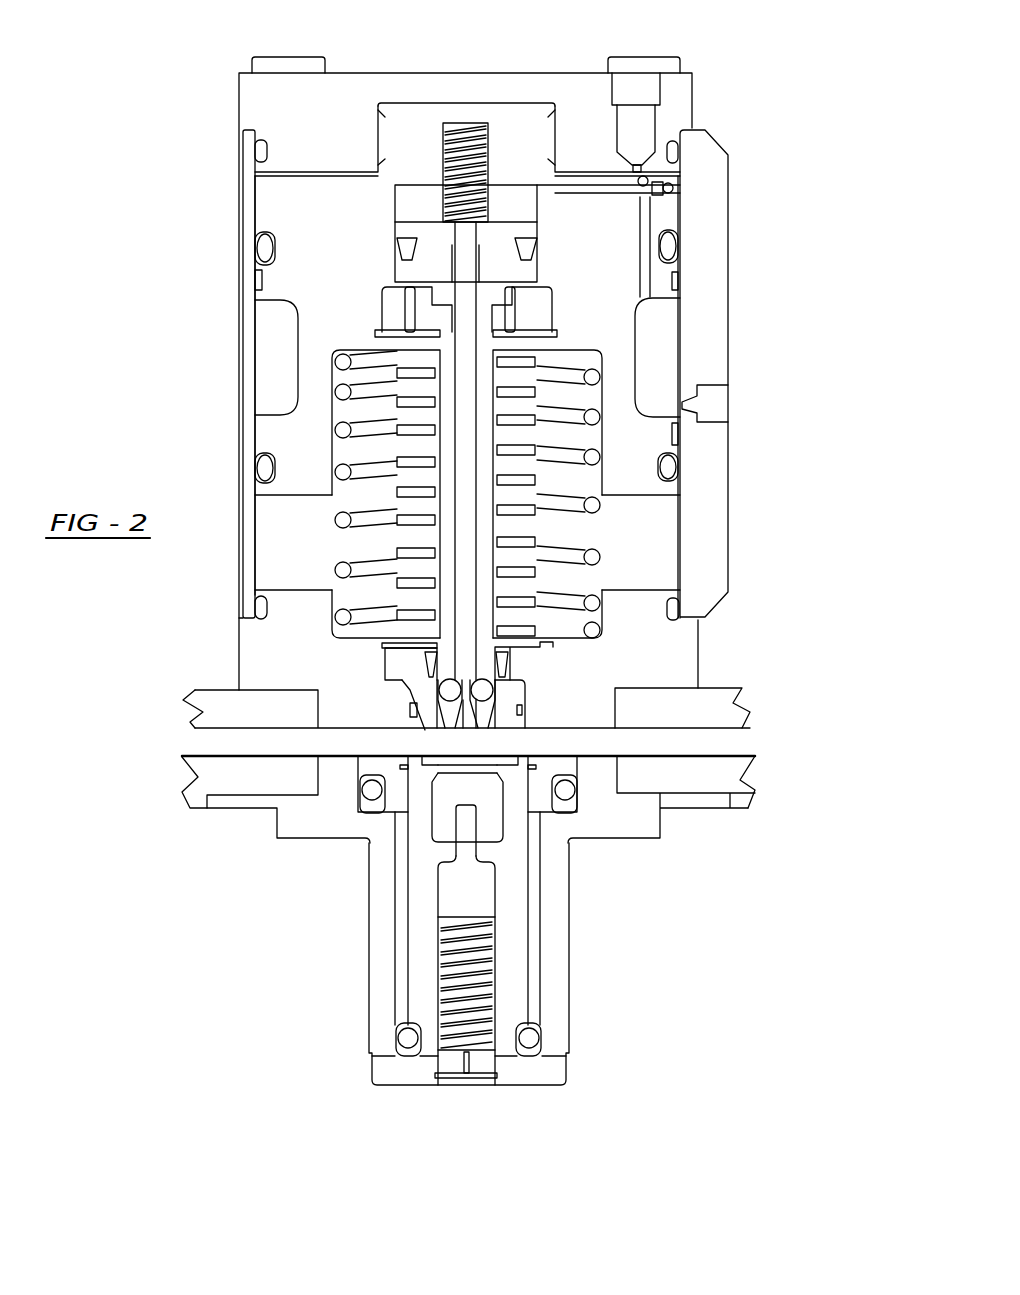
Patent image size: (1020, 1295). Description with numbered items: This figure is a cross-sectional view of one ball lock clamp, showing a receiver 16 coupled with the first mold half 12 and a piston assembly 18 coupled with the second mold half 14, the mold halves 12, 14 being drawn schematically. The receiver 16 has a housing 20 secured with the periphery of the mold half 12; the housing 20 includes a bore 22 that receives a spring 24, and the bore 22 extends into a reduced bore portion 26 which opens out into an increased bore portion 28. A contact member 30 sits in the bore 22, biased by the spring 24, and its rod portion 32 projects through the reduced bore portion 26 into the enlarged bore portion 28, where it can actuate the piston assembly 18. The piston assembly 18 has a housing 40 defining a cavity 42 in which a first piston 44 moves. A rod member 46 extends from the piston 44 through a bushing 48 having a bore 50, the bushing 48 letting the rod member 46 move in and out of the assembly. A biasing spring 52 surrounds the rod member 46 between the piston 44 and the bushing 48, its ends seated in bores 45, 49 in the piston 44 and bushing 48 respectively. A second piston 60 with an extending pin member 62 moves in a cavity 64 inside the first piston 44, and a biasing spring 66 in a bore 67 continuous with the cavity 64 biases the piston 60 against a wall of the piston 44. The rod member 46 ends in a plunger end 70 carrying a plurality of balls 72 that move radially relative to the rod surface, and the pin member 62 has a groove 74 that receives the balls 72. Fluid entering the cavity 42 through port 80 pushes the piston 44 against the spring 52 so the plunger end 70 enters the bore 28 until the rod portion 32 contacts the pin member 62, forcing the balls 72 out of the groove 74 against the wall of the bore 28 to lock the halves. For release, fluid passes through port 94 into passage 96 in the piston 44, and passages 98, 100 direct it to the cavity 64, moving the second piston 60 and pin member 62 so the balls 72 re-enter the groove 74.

The first mold half 12 is at (212, 782).
The second mold half 14 is at (212, 714).
The receiver 16 is at (310, 989).
The piston assembly 18 is at (184, 372).
The housing 20 is at (373, 1000).
The bore 22 is at (448, 982).
The spring 24 is at (495, 985).
The reduced bore portion 26 is at (493, 860).
The increased bore portion 28 is at (442, 805).
The contact member 30 is at (470, 887).
The rod portion 32 is at (467, 818).
The housing 40 is at (245, 285).
The cavity 42 is at (255, 534).
The first piston 44 is at (285, 197).
The bore 45 is at (338, 408).
The rod member 46 is at (445, 318).
The bushing 48 is at (365, 663).
The bore 49 is at (333, 607).
The bore 50 is at (428, 730).
The biasing spring 52 is at (378, 461).
The second piston 60 is at (413, 230).
The pin member 62 is at (465, 262).
The cavity 64 is at (403, 195).
The biasing spring 66 is at (435, 142).
The bore 67 is at (456, 122).
The plunger end 70 is at (525, 698).
The balls 72 is at (484, 687).
The groove 74 is at (488, 713).
The port 80 is at (637, 122).
The port 94 is at (715, 387).
The passage 96 is at (638, 363).
The passage 98 is at (645, 288).
The passage 100 is at (577, 192).